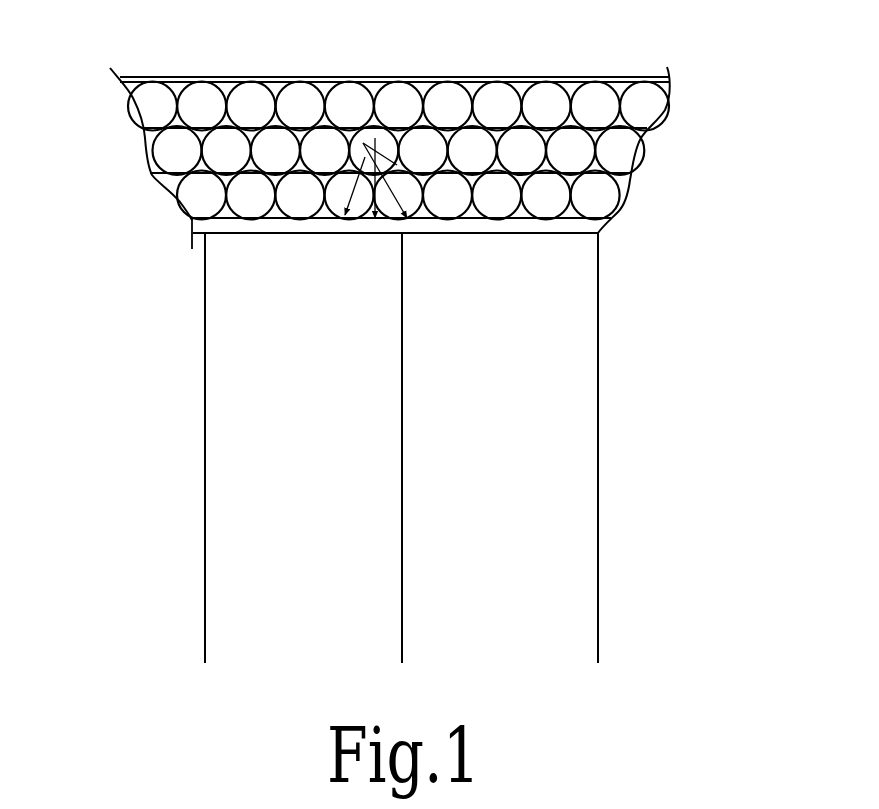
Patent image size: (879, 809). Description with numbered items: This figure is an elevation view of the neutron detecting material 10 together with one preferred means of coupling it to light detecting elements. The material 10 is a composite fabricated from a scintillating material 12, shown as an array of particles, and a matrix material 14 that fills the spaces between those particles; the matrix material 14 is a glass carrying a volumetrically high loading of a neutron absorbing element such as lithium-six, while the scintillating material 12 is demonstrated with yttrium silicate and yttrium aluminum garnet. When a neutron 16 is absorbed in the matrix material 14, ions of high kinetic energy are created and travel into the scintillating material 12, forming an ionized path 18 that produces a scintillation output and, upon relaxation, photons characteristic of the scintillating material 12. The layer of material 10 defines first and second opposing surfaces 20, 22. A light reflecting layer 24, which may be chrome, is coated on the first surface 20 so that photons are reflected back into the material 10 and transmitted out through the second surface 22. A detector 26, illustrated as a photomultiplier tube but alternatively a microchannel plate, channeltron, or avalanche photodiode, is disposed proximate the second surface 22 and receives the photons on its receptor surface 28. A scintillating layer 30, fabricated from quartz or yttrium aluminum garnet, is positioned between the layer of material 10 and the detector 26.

The neutron detecting material 10 is at (643, 147).
The scintillating material 12 is at (553, 97).
The matrix material 14 is at (172, 123).
The neutron 16 is at (397, 165).
The ionized path 18 is at (392, 122).
The first surface 20 is at (623, 78).
The second surface 22 is at (498, 222).
The light reflecting layer 24 is at (515, 77).
The detector 26 is at (268, 432).
The receptor surface 28 is at (213, 208).
The scintillating layer 30 is at (458, 226).